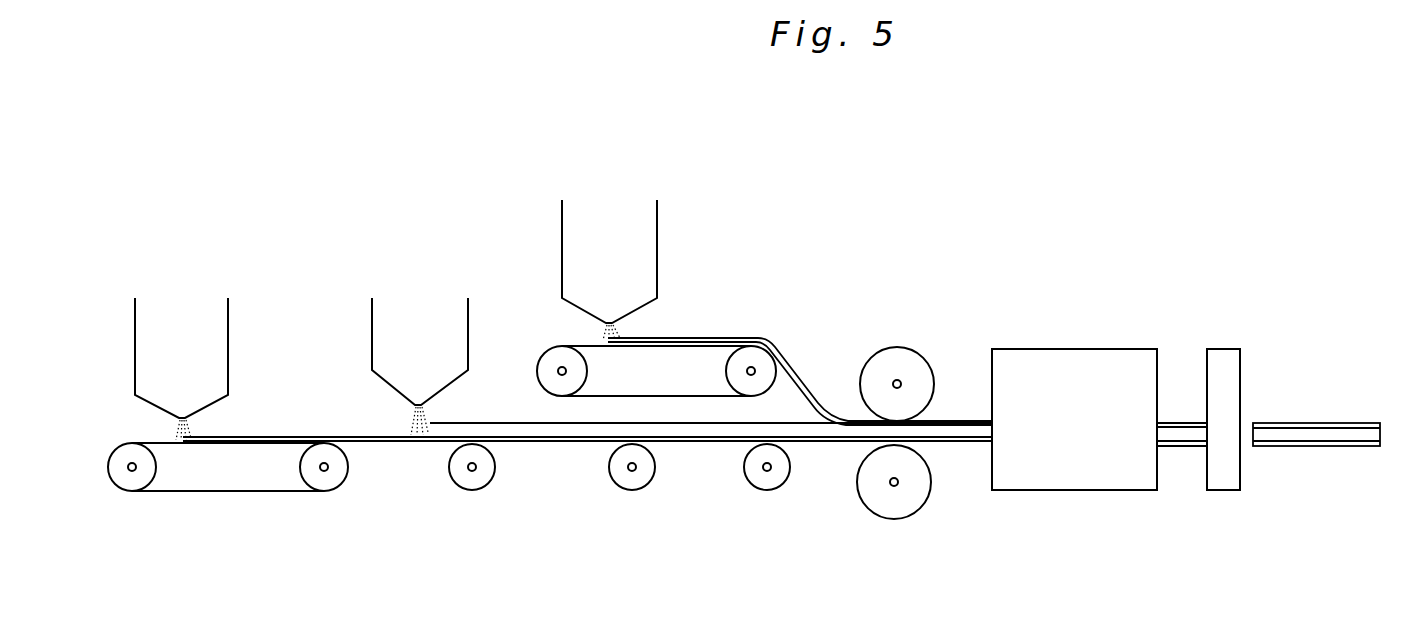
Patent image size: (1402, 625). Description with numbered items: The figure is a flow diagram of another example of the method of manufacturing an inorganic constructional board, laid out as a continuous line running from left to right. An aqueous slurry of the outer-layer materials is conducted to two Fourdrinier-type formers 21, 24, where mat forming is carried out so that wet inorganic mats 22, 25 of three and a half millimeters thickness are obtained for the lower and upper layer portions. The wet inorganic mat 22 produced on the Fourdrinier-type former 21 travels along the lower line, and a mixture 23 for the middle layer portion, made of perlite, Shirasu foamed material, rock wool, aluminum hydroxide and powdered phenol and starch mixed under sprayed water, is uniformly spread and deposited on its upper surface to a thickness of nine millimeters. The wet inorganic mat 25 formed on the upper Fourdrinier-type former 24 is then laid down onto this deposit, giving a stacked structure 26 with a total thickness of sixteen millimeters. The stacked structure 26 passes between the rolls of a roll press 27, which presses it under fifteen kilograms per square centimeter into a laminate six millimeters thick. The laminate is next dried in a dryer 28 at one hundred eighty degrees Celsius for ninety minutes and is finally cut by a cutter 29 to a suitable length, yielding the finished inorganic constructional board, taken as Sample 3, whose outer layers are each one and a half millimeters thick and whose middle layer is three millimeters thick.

The Fourdrinier-type former 21 is at (238, 491).
The wet inorganic mat 22 is at (288, 437).
The mixture for the middle layer portion 23 is at (432, 412).
The Fourdrinier-type former 24 is at (583, 342).
The wet inorganic mat 25 is at (798, 378).
The stacked structure 26 is at (852, 433).
The roll press 27 is at (902, 357).
The dryer 28 is at (1080, 357).
The cutter 29 is at (1220, 485).
The Sample 3 is at (1313, 437).